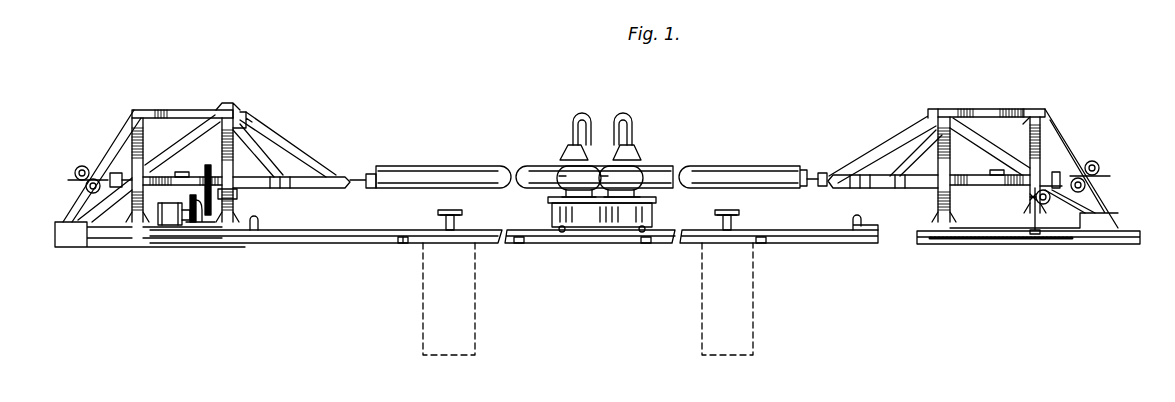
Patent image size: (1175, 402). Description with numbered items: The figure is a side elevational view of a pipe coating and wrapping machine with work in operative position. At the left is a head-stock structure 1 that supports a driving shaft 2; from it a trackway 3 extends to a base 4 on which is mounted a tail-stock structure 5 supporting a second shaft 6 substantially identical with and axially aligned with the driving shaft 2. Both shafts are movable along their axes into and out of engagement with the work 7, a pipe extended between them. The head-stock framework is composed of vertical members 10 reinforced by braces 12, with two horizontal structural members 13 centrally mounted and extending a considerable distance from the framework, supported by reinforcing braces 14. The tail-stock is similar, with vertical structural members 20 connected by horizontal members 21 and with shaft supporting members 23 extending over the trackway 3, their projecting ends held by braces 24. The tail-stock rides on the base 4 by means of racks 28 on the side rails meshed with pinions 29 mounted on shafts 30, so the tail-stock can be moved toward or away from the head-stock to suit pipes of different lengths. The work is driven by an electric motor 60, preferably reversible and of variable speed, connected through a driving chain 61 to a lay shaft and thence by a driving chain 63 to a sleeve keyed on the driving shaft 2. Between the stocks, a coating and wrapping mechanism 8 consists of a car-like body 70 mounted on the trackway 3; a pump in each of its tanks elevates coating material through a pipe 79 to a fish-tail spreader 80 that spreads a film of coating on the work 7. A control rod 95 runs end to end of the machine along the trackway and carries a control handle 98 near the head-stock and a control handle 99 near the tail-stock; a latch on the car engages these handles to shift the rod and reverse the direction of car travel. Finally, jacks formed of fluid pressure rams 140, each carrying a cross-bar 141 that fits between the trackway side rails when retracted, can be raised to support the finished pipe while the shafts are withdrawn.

The head-stock structure 1 is at (223, 109).
The driving shaft 2 is at (365, 172).
The trackway 3 is at (357, 242).
The base 4 is at (927, 242).
The tail-stock structure 5 is at (949, 107).
The second shaft 6 is at (818, 170).
The work 7 is at (722, 172).
The coating and wrapping mechanism 8 is at (588, 212).
The vertical members 10 is at (133, 145).
The braces 12 is at (190, 137).
The horizontal structural members 13 is at (291, 196).
The reinforcing braces 14 is at (287, 150).
The vertical structural members 20 is at (946, 147).
The horizontal members 21 is at (1007, 105).
The shaft supporting members 23 is at (867, 181).
The braces 24 is at (908, 127).
The racks 28 is at (1000, 244).
The pinions 29 is at (1037, 233).
The shafts 30 is at (1042, 207).
The electric motor 60 is at (173, 224).
The driving chain 61 is at (194, 213).
The driving chain 63 is at (234, 197).
The car-like body 70 is at (623, 220).
The pipe 79 is at (613, 128).
The fish-tail spreader 80 is at (567, 148).
The control rod 95 is at (817, 240).
The control handle 98 is at (257, 223).
The control handle 99 is at (860, 227).
The fluid pressure rams 140 is at (455, 223).
The cross-bar 141 is at (443, 212).